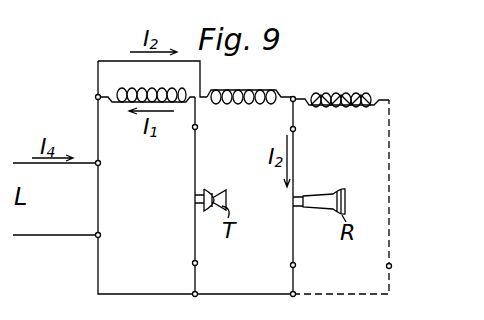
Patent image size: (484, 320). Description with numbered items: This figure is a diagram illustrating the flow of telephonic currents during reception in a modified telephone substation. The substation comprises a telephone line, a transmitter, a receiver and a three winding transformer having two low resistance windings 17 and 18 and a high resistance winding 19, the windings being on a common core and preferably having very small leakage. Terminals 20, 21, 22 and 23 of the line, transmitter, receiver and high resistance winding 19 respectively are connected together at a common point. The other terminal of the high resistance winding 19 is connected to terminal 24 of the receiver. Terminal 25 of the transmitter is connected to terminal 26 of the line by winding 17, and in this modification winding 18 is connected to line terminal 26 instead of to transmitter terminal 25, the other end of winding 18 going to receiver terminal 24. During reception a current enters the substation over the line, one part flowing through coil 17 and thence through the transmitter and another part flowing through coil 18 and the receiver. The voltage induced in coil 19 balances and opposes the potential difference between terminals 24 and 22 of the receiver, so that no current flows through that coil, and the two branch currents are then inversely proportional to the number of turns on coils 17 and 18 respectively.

The low resistance winding 17 is at (135, 83).
The low resistance winding 18 is at (250, 81).
The high resistance winding 19 is at (341, 83).
The terminal of line 20 is at (101, 236).
The terminal of transmitter 21 is at (198, 265).
The terminal of receiver 22 is at (296, 266).
The terminal of high resistance winding 23 is at (392, 267).
The terminal of receiver 24 is at (295, 131).
The terminal of transmitter 25 is at (197, 129).
The terminal of line 26 is at (101, 164).